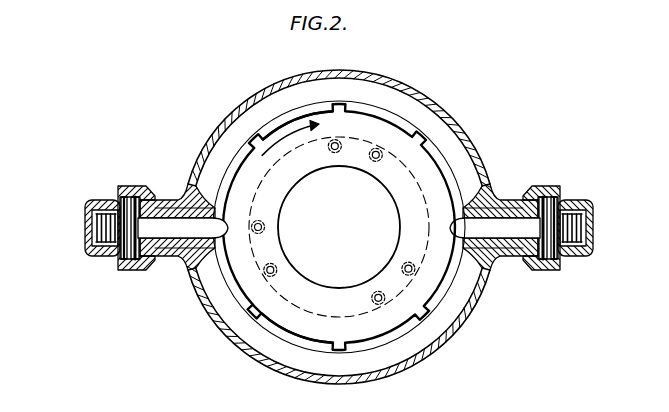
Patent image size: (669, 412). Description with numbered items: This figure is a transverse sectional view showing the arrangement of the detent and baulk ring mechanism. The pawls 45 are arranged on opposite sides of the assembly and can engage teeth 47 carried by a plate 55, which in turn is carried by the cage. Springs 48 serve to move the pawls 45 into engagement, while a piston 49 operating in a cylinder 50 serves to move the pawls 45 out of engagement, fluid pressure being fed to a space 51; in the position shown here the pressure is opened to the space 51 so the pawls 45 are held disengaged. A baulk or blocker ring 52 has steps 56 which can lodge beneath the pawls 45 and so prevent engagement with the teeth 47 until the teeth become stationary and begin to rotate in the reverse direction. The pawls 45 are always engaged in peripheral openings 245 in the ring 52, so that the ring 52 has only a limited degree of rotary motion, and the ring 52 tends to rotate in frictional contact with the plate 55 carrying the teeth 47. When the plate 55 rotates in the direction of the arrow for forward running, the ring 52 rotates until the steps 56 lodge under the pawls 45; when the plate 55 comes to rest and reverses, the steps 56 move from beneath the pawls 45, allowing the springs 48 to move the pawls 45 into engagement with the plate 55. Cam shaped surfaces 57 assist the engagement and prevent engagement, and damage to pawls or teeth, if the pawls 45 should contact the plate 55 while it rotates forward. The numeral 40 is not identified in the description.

The fitting neck wall 40 is at (175, 250).
The pawls 45 is at (182, 221).
The teeth 47 is at (260, 313).
The springs 48 is at (112, 212).
The piston 49 is at (123, 200).
The cylinder 50 is at (122, 268).
The space 51 is at (139, 197).
The baulk or blocker ring 52 is at (414, 142).
The plate 55 is at (282, 130).
The steps 56 is at (213, 247).
The cam shaped surfaces 57 is at (300, 113).
The peripheral openings 245 is at (466, 253).